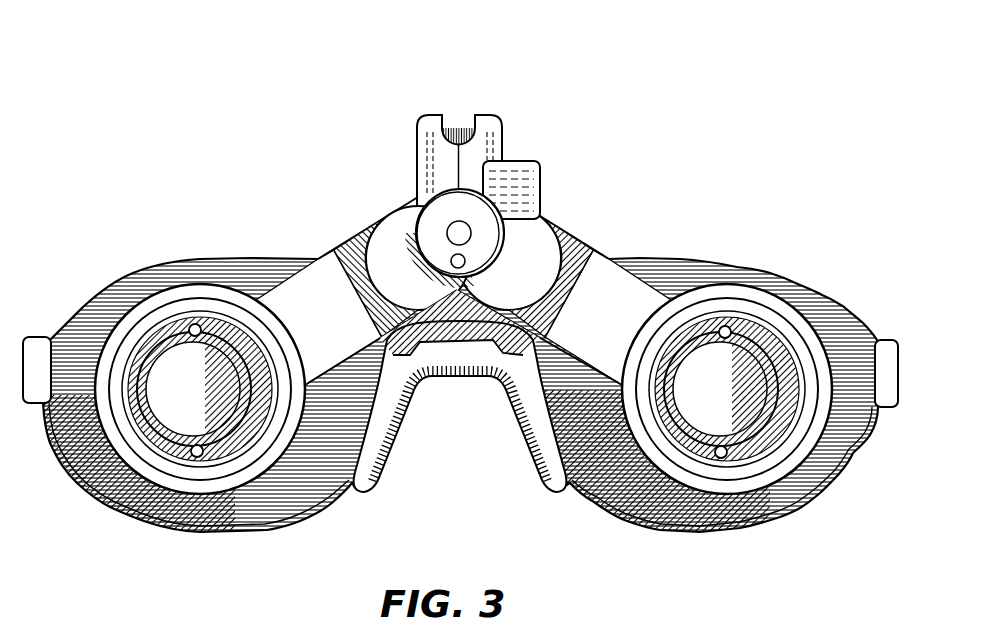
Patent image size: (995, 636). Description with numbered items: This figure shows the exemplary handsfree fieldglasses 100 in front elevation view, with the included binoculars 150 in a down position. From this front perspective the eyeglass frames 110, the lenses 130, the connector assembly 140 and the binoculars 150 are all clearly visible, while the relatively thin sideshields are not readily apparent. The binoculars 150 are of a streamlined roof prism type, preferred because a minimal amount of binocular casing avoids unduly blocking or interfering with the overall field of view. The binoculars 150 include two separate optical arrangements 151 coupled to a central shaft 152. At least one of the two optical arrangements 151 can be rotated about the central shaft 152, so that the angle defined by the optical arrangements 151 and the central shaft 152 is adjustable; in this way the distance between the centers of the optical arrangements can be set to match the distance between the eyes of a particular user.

The handsfree fieldglasses 100 is at (188, 94).
The eyeglass frames 110 is at (38, 343).
The lenses 130 is at (822, 467).
The connector assembly 140 is at (487, 138).
The binoculars 150 is at (598, 280).
The separate optical arrangements 151 is at (257, 467).
The central shaft 152 is at (437, 220).